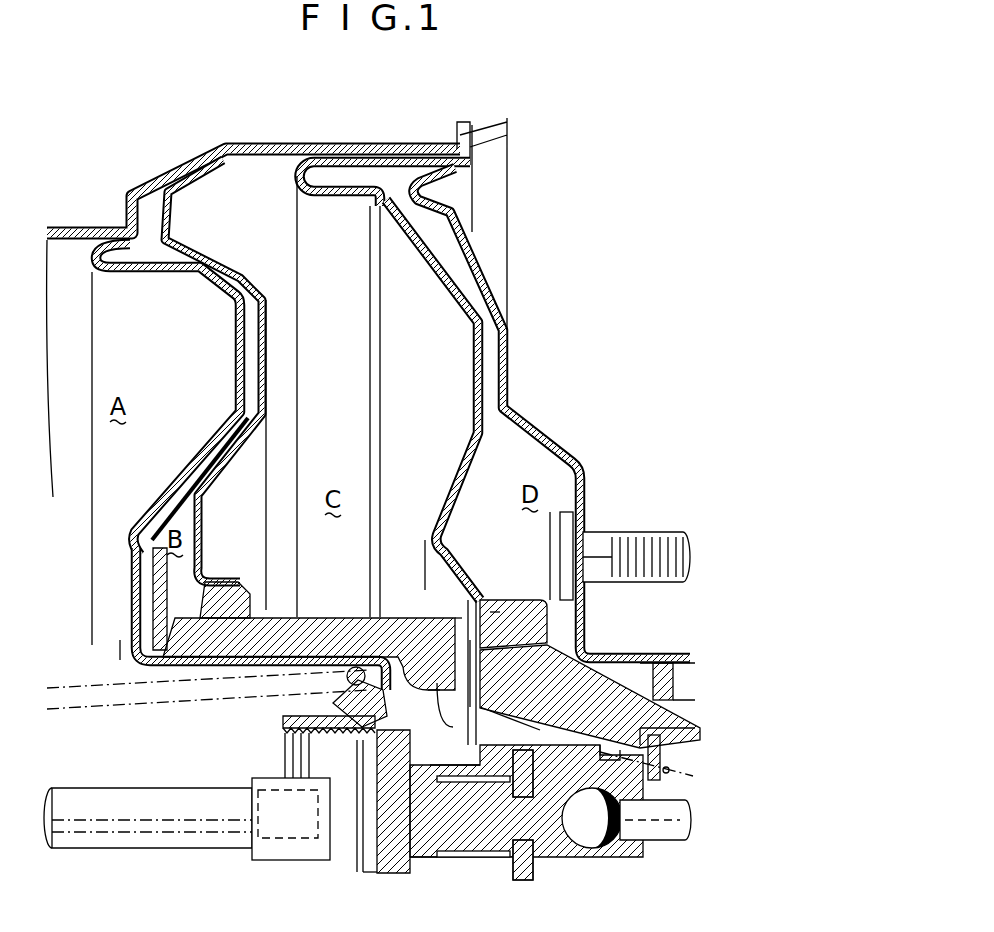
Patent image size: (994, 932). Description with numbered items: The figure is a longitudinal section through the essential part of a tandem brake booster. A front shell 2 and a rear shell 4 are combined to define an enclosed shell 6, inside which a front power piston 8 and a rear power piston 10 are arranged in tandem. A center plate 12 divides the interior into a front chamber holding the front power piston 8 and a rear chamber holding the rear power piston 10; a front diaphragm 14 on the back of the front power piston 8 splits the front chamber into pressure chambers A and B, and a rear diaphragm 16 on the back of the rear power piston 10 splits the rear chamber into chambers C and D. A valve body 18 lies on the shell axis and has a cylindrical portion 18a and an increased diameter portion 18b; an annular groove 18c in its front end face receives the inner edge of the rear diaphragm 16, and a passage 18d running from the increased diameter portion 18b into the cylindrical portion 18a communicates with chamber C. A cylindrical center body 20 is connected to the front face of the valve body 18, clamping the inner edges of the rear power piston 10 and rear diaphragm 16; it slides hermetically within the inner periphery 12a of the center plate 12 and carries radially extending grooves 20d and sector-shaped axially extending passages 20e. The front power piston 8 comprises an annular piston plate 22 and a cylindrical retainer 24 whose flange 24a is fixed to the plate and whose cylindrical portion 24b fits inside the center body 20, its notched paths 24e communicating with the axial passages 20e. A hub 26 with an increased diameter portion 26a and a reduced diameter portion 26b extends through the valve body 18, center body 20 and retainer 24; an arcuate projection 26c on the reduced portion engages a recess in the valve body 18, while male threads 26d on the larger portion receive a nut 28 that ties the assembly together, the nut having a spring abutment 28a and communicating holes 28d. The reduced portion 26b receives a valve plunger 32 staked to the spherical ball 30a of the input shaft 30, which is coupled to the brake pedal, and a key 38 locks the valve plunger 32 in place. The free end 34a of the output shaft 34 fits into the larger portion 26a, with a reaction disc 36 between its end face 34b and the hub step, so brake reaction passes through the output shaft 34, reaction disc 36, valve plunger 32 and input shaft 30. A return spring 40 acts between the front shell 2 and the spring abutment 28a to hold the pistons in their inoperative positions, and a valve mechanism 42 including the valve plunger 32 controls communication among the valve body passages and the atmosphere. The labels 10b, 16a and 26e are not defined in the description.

The front shell 2 is at (240, 143).
The rear shell 4 is at (512, 352).
The enclosed shell 6 is at (297, 133).
The front power piston 8 is at (164, 490).
The rear power piston 10 is at (465, 475).
The inner cover flange 10b is at (480, 655).
The center plate 12 is at (245, 285).
The inner periphery of the center plate 12a is at (245, 580).
The front diaphragm 14 is at (200, 490).
The rear diaphragm 16 is at (453, 562).
The release lever boss 16a is at (513, 627).
The valve body 18 is at (600, 675).
The cylindrical portion of the valve body 18a is at (683, 690).
The increased diameter portion of the valve body 18b is at (545, 598).
The annular groove 18c is at (498, 612).
The passage 18d is at (512, 729).
The center body 20 is at (340, 605).
The radially extending grooves 20d is at (440, 603).
The axially extending passages 20e is at (415, 658).
The annular piston plate 22 is at (185, 493).
The cylindrical retainer 24 is at (118, 648).
The flange 24a is at (135, 545).
The cylindrical portion of the retainer 24b is at (182, 662).
The notched paths 24e is at (447, 765).
The hub 26 is at (436, 720).
The increased diameter portion of the hub 26a is at (378, 760).
The reduced diameter portion of the hub 26b is at (526, 801).
The arcuate projection 26c is at (583, 750).
The male threads 26d is at (288, 728).
The sleeve end 26e is at (412, 860).
The nut 28 is at (335, 692).
The spring abutment 28a is at (400, 617).
The communicating holes 28d is at (345, 668).
The input shaft 30 is at (668, 830).
The spherical ball 30a is at (592, 830).
The valve plunger 32 is at (470, 838).
The output shaft 34 is at (185, 832).
The free end of the output shaft 34a is at (350, 843).
The end face of the output shaft 34b is at (357, 855).
The reaction disc 36 is at (380, 860).
The key 38 is at (505, 855).
The return spring 40 is at (116, 705).
The valve mechanism 42 is at (628, 748).